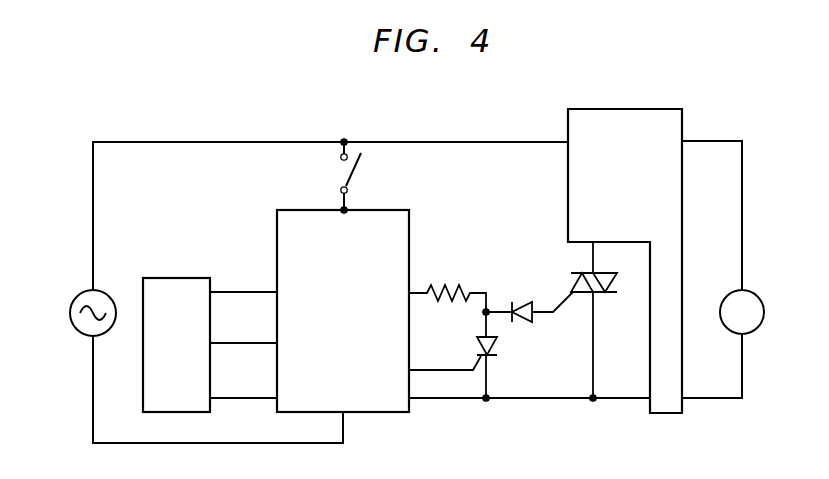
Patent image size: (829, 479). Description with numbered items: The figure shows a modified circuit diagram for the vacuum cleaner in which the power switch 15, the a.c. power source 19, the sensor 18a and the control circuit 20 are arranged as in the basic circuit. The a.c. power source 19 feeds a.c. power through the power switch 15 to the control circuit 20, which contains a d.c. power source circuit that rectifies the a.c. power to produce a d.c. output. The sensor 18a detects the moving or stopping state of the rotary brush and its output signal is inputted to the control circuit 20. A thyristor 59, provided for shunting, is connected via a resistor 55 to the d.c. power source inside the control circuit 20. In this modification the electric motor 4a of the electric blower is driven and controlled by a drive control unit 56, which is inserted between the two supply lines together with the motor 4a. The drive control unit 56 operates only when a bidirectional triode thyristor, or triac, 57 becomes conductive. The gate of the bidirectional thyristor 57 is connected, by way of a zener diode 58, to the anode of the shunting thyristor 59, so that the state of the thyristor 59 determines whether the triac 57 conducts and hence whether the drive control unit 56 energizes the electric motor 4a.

The electric motor 4a is at (727, 330).
The power switch 15 is at (334, 176).
The sensor 18a is at (191, 278).
The a.c. power source 19 is at (110, 293).
The control circuit 20 is at (410, 233).
The resistor 55 is at (460, 290).
The drive control unit 56 is at (660, 109).
The bidirectional triode thyristor (triac) 57 is at (598, 297).
The zener diode 58 is at (533, 320).
The thyristor 59 is at (498, 346).